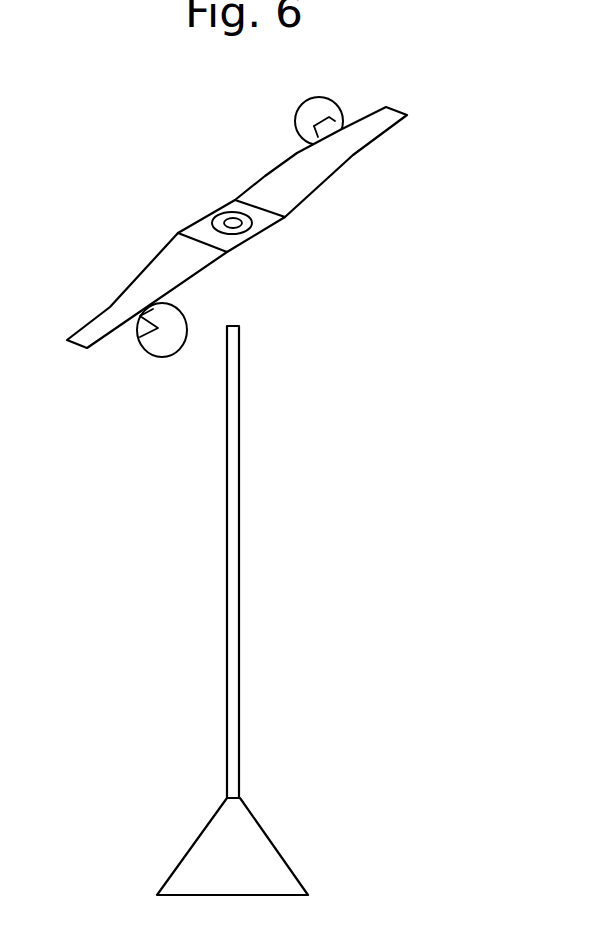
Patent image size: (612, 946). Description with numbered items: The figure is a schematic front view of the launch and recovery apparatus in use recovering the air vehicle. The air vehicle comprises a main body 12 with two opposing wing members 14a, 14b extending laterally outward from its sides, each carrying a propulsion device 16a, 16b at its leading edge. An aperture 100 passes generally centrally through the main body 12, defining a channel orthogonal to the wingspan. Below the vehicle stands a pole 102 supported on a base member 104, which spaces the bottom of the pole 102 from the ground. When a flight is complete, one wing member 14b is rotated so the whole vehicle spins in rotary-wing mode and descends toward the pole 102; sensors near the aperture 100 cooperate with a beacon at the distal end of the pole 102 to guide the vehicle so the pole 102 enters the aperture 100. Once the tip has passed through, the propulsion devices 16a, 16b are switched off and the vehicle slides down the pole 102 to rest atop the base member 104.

The main body 12 is at (255, 235).
The wing member 14a is at (128, 288).
The wing member 14b is at (353, 155).
The propulsion device 16a is at (160, 357).
The propulsion device 16b is at (295, 113).
The aperture 100 is at (232, 221).
The pole 102 is at (240, 471).
The base member 104 is at (193, 842).